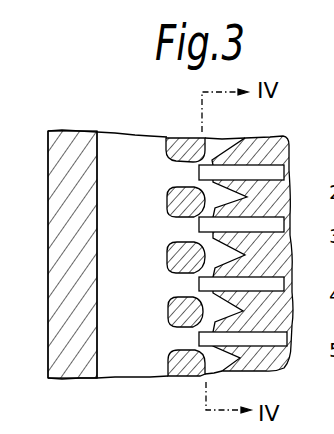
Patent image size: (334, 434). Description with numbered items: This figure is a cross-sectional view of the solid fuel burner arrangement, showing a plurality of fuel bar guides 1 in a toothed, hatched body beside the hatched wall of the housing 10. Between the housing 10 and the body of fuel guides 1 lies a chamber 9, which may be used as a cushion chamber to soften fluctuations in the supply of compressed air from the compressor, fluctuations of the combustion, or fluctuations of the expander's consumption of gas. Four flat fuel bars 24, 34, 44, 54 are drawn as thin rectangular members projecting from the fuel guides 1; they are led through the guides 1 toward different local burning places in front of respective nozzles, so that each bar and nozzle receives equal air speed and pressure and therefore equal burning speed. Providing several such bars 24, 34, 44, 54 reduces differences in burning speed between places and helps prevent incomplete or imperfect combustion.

The fuel guide 1 is at (288, 140).
The chamber 9 is at (130, 256).
The housing 10 is at (88, 182).
The fuel bar 24 is at (281, 173).
The fuel bar 34 is at (280, 228).
The fuel bar 44 is at (282, 283).
The fuel bar 54 is at (287, 340).